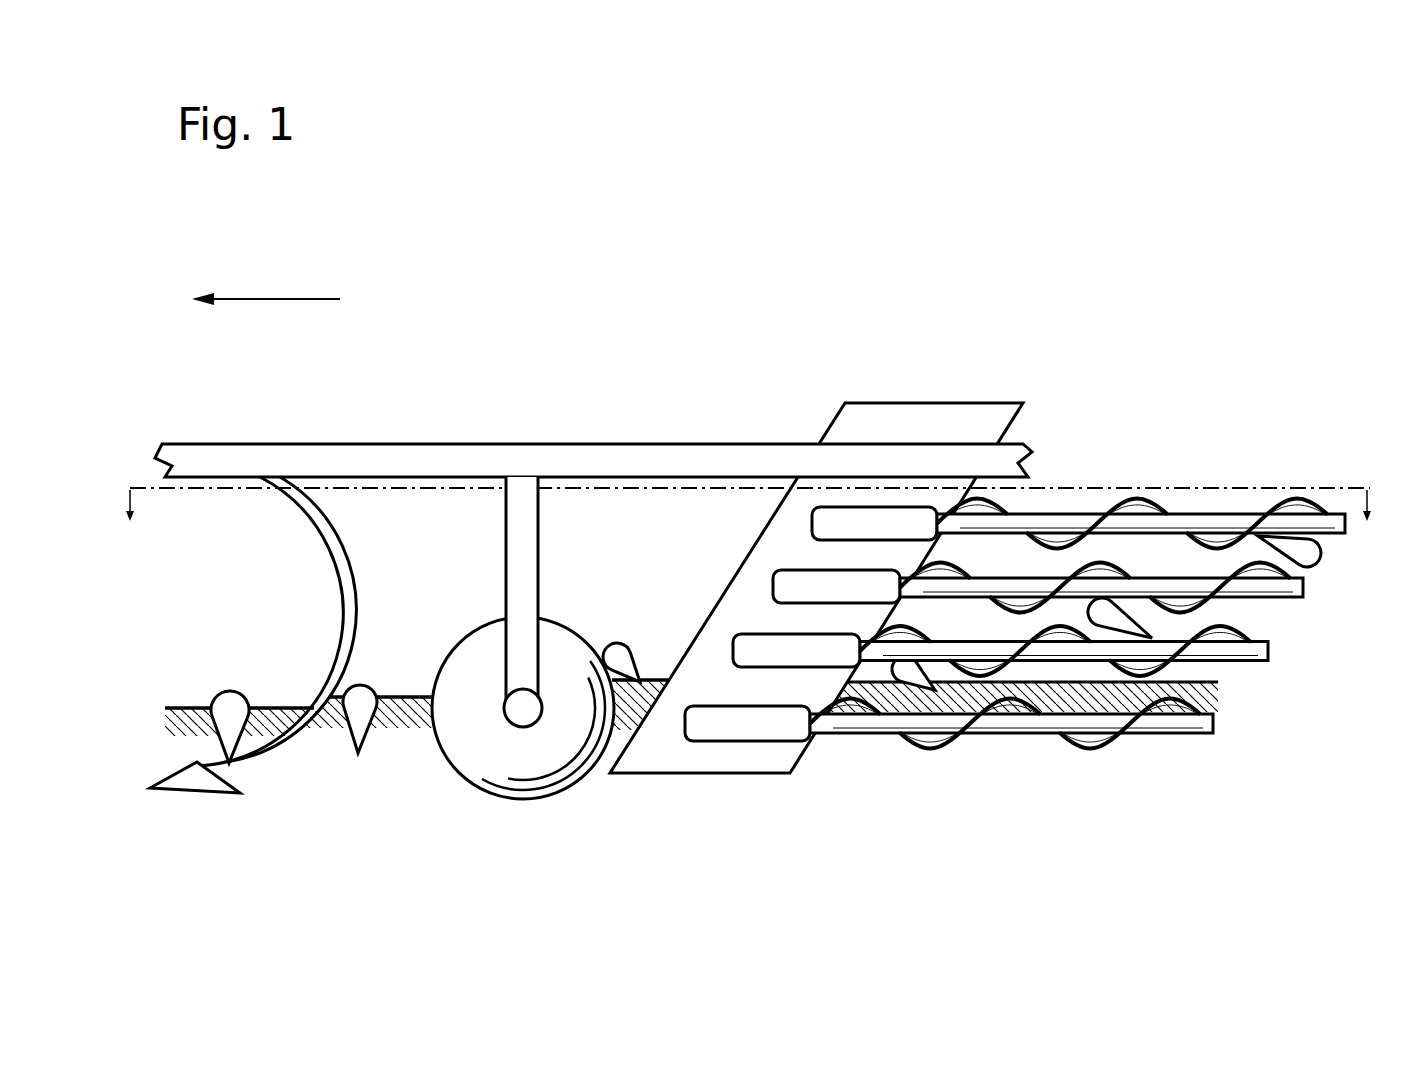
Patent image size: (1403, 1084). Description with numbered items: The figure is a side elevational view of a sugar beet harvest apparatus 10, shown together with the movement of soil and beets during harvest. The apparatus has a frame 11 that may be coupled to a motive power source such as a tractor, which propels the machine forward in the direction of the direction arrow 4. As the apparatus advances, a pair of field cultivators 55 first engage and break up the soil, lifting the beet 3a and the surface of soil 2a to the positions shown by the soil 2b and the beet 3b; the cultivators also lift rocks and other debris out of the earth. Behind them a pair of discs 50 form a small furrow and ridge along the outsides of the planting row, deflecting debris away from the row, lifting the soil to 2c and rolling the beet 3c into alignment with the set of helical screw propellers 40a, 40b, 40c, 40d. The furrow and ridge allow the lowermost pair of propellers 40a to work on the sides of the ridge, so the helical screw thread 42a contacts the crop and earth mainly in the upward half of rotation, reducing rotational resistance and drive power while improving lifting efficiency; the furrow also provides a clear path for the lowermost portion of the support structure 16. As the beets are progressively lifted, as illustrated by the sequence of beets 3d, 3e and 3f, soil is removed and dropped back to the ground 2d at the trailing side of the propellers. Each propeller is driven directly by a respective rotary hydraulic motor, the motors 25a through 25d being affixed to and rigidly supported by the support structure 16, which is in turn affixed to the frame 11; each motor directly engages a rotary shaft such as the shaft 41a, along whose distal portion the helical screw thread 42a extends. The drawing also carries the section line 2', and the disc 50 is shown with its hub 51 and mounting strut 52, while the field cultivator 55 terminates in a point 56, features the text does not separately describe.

The section line 2'- 2' is at (752, 521).
The direction arrow 4 is at (272, 299).
The sugar beet harvest apparatus 10 is at (1037, 208).
The frame 11 is at (707, 453).
The support structure 16 is at (1009, 410).
The surface of soil 2a is at (191, 694).
The soil 2b is at (415, 685).
The soil 2c is at (658, 668).
The ground 2d is at (1225, 712).
The beet 3a is at (232, 710).
The beet 3b is at (360, 727).
The beet 3c is at (608, 660).
The sugar beet 3d is at (905, 676).
The sugar beet 3e is at (1100, 615).
The sugar beet 3f is at (1309, 548).
The rotary hydraulic motor 25a is at (743, 732).
The rotary hydraulic motor 25d is at (903, 520).
The helical screw propeller 40a is at (1049, 771).
The helical screw propeller 40b is at (1256, 678).
The helical screw propeller 40c is at (1280, 614).
The helical screw propeller 40d is at (1215, 502).
The rotary shaft 41a is at (1196, 725).
The helical screw thread 42a is at (1100, 742).
The disc 50 is at (523, 609).
The wheel axle 51 is at (530, 717).
The wheel strut 52 is at (527, 520).
The field cultivator 55 is at (330, 522).
The plow point 56 is at (195, 780).